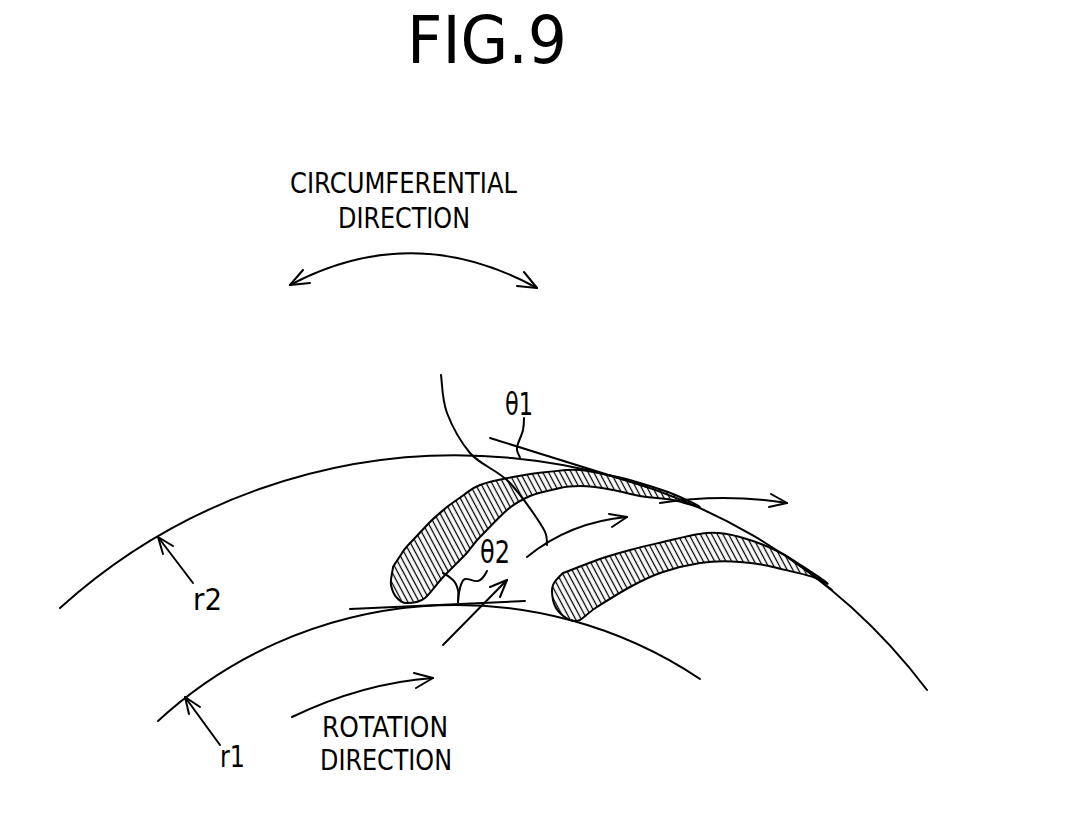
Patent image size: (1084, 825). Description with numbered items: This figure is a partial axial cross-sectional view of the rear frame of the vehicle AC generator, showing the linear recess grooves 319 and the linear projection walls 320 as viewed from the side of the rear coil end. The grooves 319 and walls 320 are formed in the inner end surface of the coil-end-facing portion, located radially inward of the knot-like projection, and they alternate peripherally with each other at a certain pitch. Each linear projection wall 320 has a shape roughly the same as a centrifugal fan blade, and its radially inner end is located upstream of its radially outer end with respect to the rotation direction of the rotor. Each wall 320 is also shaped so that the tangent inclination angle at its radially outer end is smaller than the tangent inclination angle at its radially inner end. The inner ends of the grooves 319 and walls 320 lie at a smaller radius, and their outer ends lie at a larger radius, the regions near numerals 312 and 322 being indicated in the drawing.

The hub (inner peripheral portion) of fan 312 is at (413, 606).
The linear recess groove 319 is at (337, 486).
The linear projection wall 320 is at (392, 577).
The trailing edge tip of blade 322 is at (790, 560).